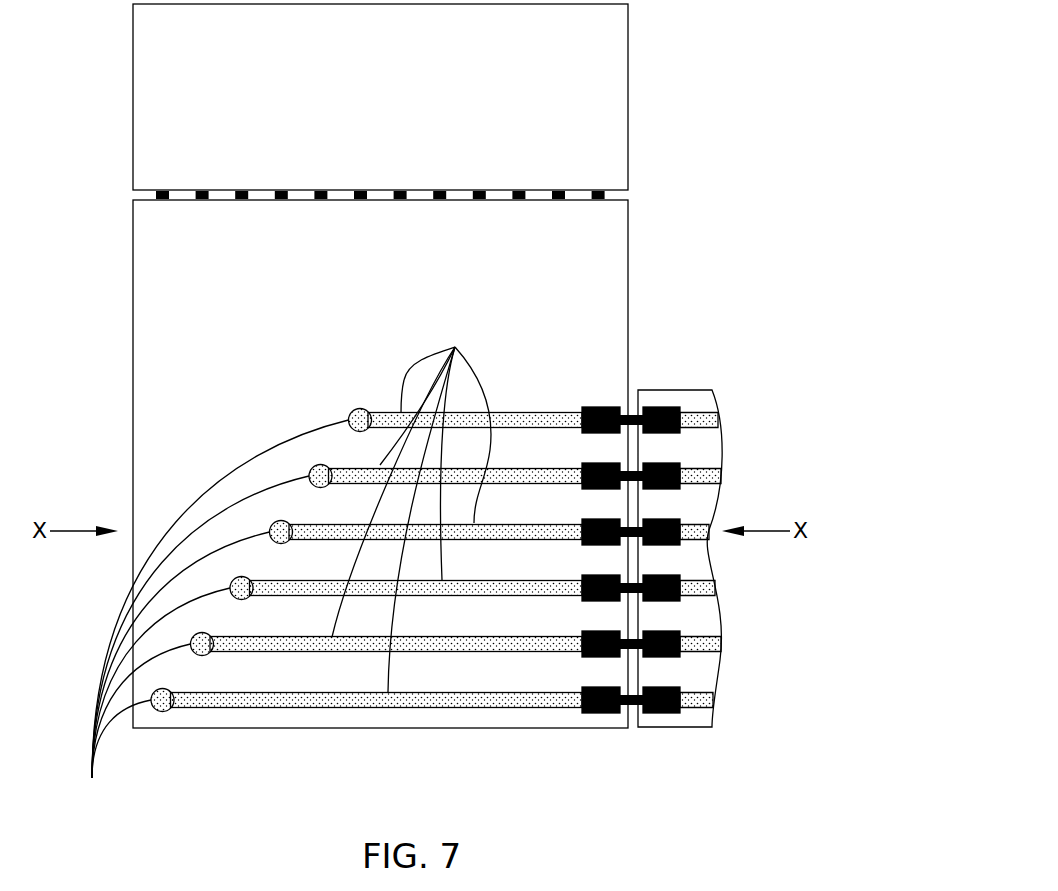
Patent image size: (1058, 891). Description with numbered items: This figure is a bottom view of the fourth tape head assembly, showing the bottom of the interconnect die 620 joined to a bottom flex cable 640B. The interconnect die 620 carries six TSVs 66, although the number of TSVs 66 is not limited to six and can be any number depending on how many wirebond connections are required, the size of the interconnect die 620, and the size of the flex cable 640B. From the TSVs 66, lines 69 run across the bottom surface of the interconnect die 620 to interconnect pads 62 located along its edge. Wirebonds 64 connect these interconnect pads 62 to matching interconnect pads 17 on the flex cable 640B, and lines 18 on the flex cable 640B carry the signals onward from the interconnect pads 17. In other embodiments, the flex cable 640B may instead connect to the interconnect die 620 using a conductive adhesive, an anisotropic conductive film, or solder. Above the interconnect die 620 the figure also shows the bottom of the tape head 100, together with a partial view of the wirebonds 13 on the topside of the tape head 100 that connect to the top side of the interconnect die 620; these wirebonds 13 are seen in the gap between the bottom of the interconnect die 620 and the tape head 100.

The tape head 100 is at (615, 71).
The wirebonds 13 is at (605, 193).
The interconnect die 620 is at (280, 728).
The TSVs 66 is at (213, 615).
The lines 69 is at (411, 507).
The interconnect pads 62 is at (598, 434).
The wirebonds 64 is at (632, 408).
The interconnect pads 17 is at (664, 434).
The lines 18 is at (718, 478).
The flex cable 640B is at (680, 722).